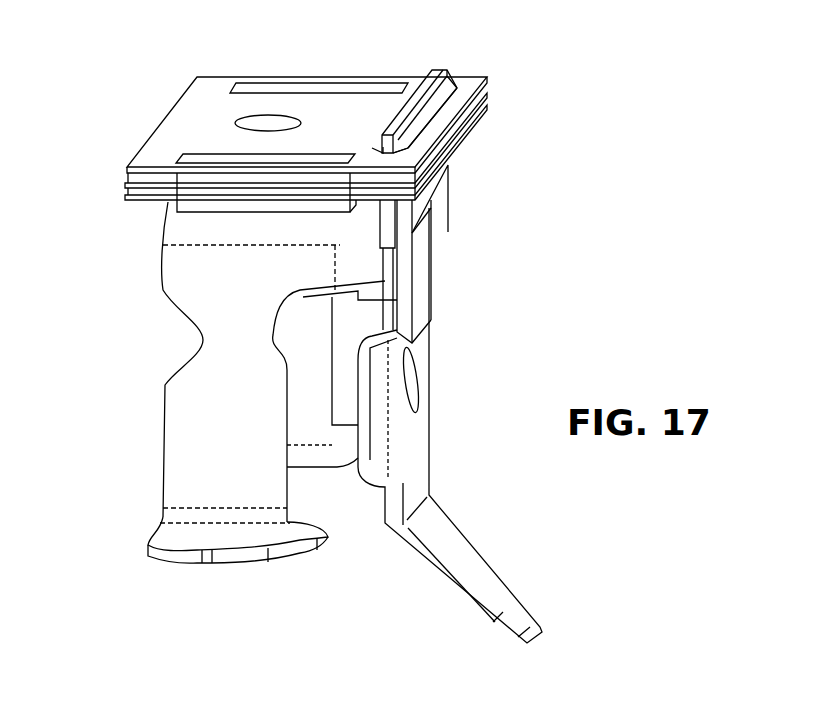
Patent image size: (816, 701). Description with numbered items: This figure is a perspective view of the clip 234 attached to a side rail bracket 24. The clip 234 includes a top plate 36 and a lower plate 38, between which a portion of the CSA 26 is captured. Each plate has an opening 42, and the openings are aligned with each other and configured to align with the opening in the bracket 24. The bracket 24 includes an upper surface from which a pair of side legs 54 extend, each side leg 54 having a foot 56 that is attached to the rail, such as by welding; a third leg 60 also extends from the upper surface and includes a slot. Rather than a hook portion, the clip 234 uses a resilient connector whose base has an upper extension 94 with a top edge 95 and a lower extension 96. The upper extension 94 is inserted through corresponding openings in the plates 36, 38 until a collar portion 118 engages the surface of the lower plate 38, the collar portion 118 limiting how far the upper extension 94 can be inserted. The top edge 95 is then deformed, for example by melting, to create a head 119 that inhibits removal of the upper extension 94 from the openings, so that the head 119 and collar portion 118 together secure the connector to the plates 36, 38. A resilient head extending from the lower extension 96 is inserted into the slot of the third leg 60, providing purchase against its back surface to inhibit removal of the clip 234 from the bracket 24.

The bracket 24 is at (151, 406).
The CSA 26 is at (142, 182).
The top plate 36 is at (212, 88).
The lower plate 38 is at (140, 203).
The opening 42 is at (266, 125).
The side leg 54 is at (180, 440).
The foot 56 is at (233, 535).
The third leg 60 is at (415, 440).
The upper extension 94 is at (390, 213).
The top edge 95 is at (437, 72).
The lower extension 96 is at (425, 300).
The collar portion 118 is at (440, 180).
The head 119 is at (448, 90).
The clip 234 is at (519, 57).